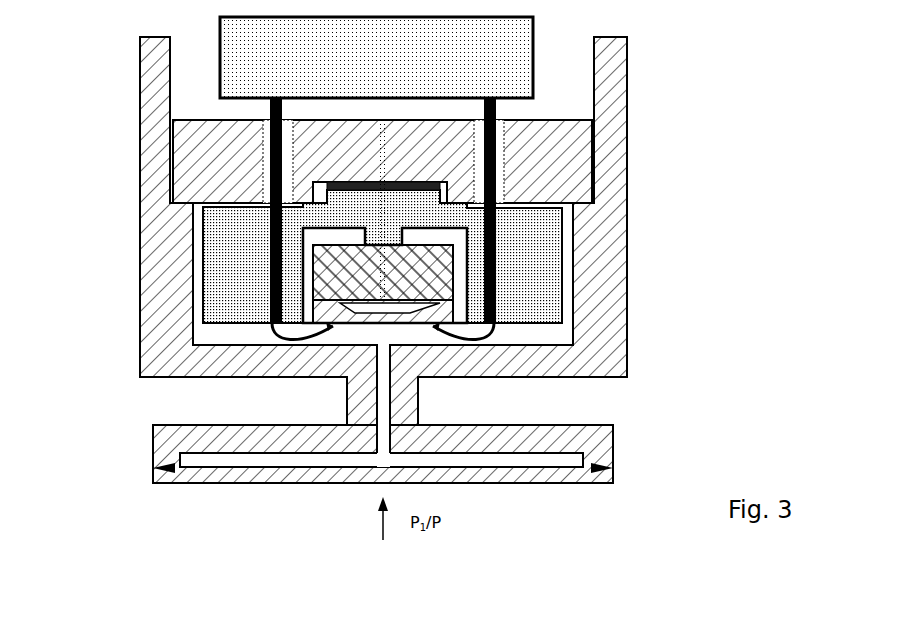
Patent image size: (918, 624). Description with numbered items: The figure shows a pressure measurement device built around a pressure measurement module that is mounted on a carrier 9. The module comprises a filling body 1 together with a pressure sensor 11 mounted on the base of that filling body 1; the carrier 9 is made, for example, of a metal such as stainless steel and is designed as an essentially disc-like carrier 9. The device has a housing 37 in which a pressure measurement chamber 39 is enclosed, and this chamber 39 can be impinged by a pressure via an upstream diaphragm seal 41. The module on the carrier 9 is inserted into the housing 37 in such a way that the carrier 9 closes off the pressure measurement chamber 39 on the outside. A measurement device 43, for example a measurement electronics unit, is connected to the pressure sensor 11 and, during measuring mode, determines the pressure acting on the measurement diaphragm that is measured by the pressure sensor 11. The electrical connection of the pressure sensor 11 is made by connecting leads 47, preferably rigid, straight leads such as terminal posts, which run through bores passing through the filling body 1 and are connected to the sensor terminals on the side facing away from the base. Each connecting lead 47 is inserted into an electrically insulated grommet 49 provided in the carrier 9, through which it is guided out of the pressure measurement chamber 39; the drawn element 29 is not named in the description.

The filling body 1 is at (233, 287).
The carrier 9 is at (193, 167).
The pressure sensor 11 is at (440, 280).
The contact layer 29 is at (430, 178).
The housing 37 is at (158, 232).
The pressure measurement chamber 39 is at (396, 346).
The diaphragm seal 41 is at (173, 440).
The measurement device 43 is at (392, 65).
The connecting lead 47 is at (270, 163).
The electrically insulated grommet 49 is at (267, 143).